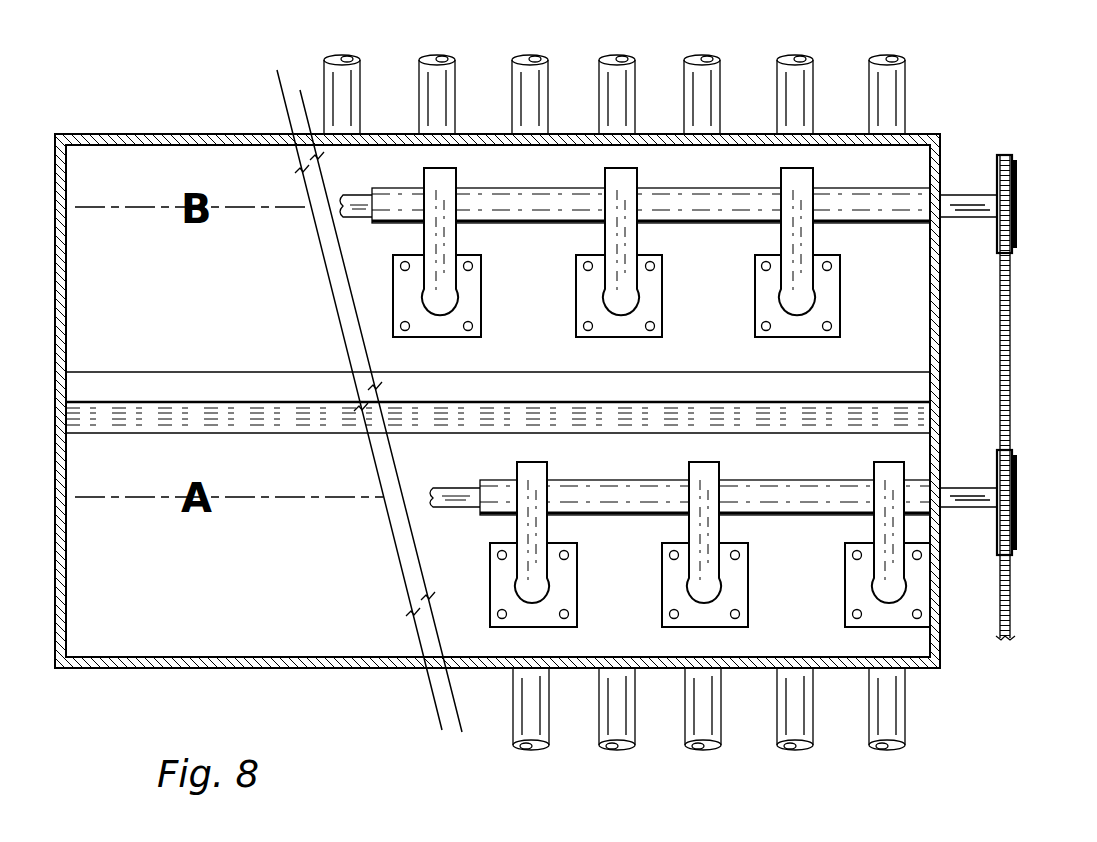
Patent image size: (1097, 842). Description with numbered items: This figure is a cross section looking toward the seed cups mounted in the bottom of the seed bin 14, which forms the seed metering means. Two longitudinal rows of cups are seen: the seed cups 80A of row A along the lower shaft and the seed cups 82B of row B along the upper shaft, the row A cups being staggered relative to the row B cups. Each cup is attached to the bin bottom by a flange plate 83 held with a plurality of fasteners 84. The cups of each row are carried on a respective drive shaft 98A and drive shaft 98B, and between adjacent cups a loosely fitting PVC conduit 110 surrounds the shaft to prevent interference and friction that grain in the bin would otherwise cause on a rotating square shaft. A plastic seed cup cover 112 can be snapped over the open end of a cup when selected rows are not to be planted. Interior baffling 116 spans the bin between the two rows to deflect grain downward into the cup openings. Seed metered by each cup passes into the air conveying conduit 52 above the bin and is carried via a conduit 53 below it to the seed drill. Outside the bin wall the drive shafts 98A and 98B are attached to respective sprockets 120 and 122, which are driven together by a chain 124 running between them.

The seed bin 14 is at (147, 134).
The air conveying conduit 52 is at (882, 105).
The conduit 53 is at (610, 727).
The seed cup 80A is at (704, 468).
The seed cup 82B is at (445, 243).
The flange plate 83 is at (832, 290).
The fastener 84 is at (404, 331).
The drive shaft 98A is at (455, 506).
The drive shaft 98B is at (358, 202).
The PVC conduit 110 is at (410, 207).
The seed cup cover 112 is at (797, 180).
The interior baffling 116 is at (423, 403).
The sprocket 120 is at (1019, 497).
The sprocket 122 is at (1019, 170).
The chain 124 is at (1012, 325).